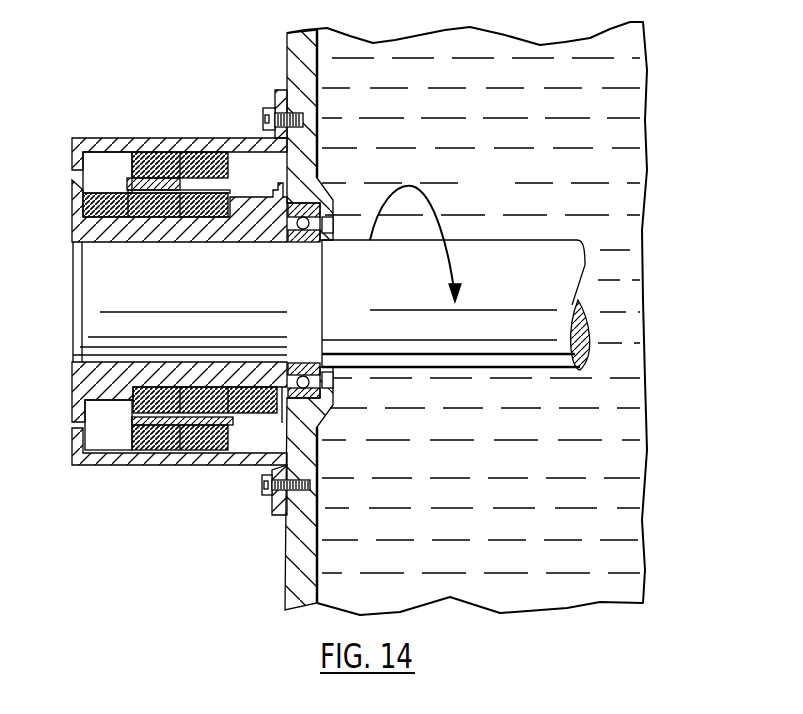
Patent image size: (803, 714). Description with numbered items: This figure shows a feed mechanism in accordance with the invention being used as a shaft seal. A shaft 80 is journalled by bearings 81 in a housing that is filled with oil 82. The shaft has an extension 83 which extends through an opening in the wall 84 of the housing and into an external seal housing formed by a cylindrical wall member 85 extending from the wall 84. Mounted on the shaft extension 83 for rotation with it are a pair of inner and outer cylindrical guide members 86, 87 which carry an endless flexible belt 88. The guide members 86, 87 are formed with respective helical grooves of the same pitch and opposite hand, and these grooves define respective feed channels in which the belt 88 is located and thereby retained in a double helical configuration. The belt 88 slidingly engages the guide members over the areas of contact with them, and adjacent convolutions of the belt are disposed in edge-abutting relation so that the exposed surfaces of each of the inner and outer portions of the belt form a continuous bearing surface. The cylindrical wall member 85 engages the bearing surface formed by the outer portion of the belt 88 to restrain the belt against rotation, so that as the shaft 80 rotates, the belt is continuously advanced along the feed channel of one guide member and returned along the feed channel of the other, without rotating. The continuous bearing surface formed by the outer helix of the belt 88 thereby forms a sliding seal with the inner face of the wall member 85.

The shaft 80 is at (497, 240).
The bearings 81 is at (332, 374).
The oil 82 is at (467, 318).
The shaft extension 83 is at (92, 284).
The wall 84 is at (300, 540).
The cylindrical wall member 85 is at (177, 138).
The inner cylindrical guide member 86 is at (95, 228).
The outer cylindrical guide member 87 is at (127, 178).
The endless flexible belt 88 is at (157, 422).